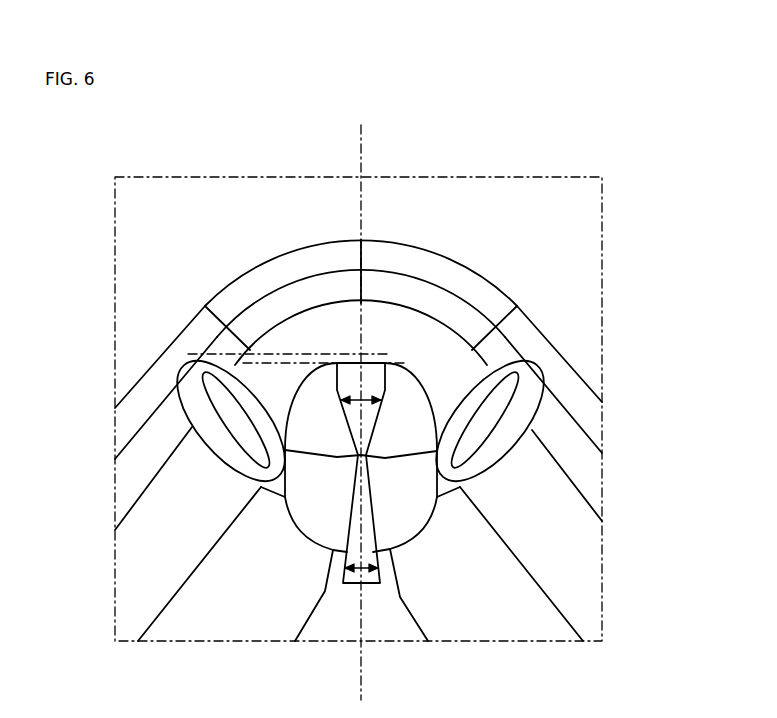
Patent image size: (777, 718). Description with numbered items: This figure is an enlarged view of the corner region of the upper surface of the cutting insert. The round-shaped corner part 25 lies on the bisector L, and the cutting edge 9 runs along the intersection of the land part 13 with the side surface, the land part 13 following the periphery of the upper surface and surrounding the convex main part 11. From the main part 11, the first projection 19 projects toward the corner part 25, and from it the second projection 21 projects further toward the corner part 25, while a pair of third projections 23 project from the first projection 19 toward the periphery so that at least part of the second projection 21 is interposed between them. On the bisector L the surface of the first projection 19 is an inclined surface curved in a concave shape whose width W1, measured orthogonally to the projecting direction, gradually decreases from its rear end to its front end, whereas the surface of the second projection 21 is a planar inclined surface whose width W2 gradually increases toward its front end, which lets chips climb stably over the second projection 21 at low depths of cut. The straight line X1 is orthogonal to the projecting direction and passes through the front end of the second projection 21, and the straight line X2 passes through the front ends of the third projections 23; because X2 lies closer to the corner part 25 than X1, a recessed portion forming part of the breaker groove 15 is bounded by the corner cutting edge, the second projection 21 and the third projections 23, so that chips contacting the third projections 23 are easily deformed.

The bisector L is at (362, 400).
The corner part 25 is at (359, 237).
The land part 13 is at (187, 347).
The cutting edge 9 is at (234, 283).
The straight line X1 is at (366, 301).
The straight line X2 is at (293, 353).
The second projection 21 is at (415, 413).
The first projection 19 is at (393, 510).
The main part 11 is at (360, 600).
The breaker groove 15 is at (570, 542).
The third projections 23 is at (215, 422).
The width W2 is at (348, 404).
The width W1 is at (362, 570).